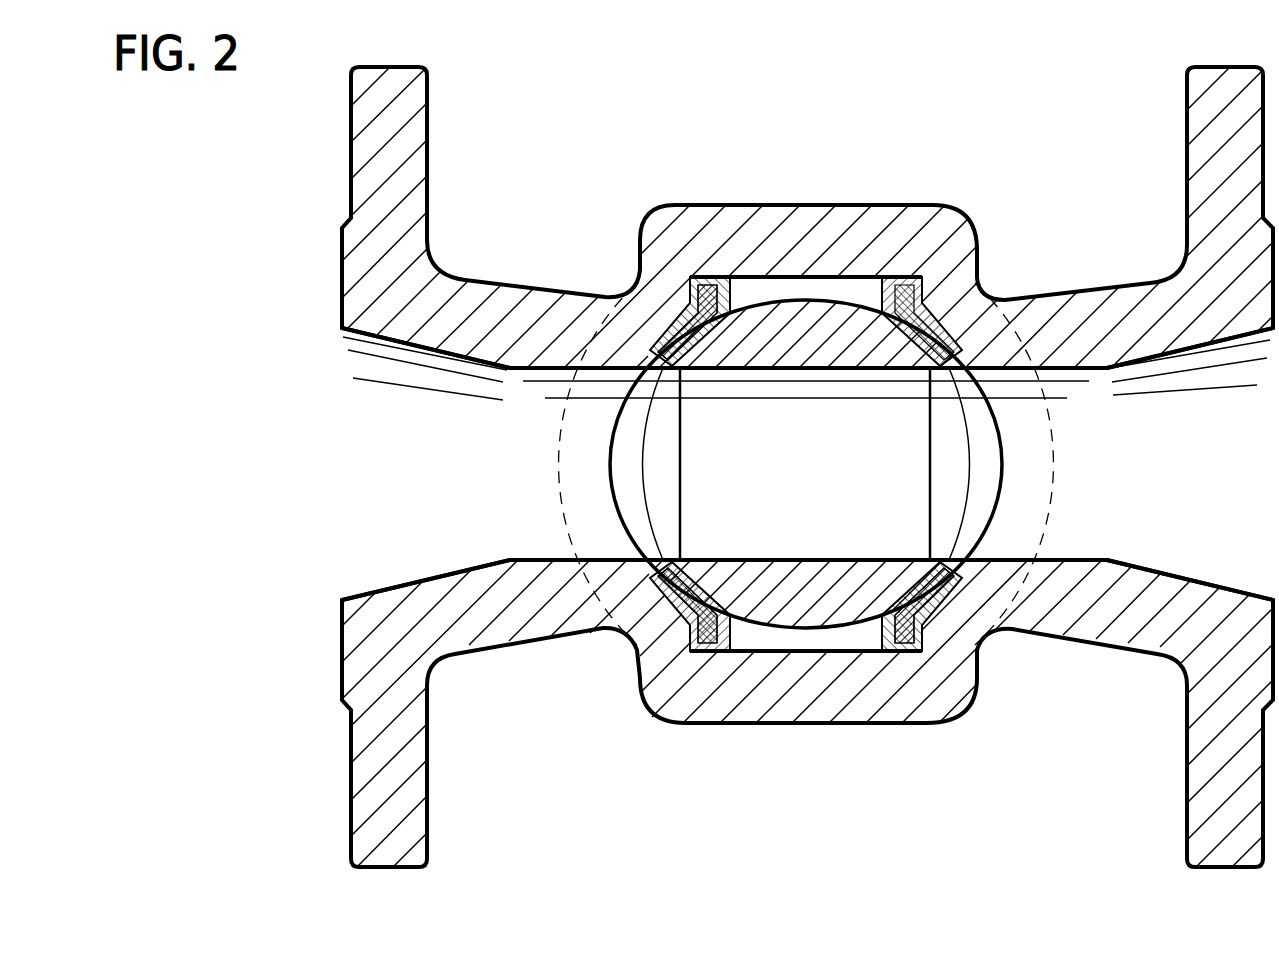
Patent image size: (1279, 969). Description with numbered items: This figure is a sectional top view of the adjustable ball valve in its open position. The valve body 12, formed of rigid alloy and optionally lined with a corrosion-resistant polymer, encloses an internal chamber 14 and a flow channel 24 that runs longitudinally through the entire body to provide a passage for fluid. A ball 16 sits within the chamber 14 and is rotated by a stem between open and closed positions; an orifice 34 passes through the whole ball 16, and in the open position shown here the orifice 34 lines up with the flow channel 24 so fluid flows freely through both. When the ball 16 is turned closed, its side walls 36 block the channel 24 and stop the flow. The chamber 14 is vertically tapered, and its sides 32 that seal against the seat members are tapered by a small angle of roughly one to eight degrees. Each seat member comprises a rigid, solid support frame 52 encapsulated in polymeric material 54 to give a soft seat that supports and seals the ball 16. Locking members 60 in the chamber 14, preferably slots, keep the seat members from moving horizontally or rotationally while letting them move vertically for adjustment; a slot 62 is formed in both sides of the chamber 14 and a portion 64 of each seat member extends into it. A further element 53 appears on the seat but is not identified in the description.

The valve body 12 is at (890, 723).
The internal chamber 14 is at (803, 642).
The ball 16 is at (814, 356).
The flow channel 24 is at (398, 476).
The sides of chamber 32 is at (668, 330).
The orifice 34 is at (759, 476).
The ball side walls 36 is at (773, 302).
The support frame 52 is at (944, 618).
The seat seal 53 is at (703, 290).
The polymeric material 54 is at (893, 647).
The locking members 60 is at (693, 643).
The slot 62 is at (812, 285).
The portion of seat member 64 is at (720, 647).